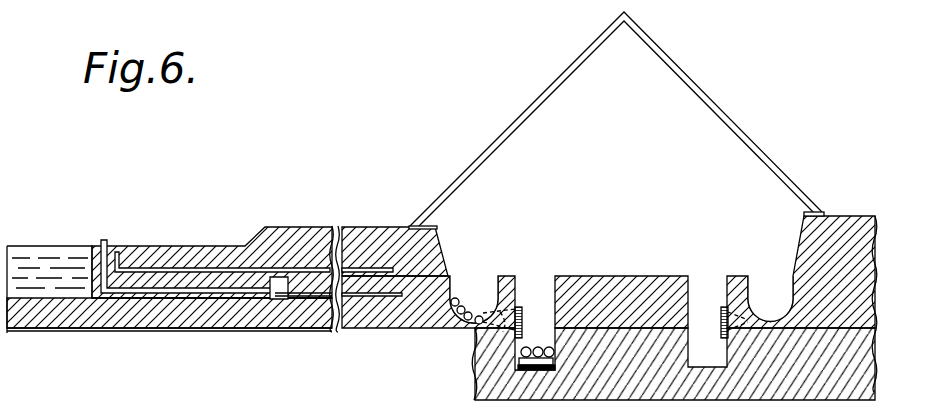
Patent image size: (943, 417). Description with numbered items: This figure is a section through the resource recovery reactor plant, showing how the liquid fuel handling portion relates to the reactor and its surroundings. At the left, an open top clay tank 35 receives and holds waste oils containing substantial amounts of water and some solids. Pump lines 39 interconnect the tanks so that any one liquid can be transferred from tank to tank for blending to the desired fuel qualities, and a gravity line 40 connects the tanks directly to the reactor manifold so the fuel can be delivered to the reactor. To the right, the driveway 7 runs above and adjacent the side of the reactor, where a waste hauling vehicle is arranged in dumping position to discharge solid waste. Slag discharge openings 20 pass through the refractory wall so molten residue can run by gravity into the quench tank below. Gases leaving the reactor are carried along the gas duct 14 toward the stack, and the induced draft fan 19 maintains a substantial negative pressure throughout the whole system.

The driveway 7 is at (840, 215).
The gas duct 14 is at (561, 346).
The induced draft fan 19 is at (738, 125).
The slag discharge openings 20 is at (477, 362).
The open top clay tanks 35 is at (33, 246).
The pump lines 39 is at (190, 288).
The gravity line 40 is at (372, 270).